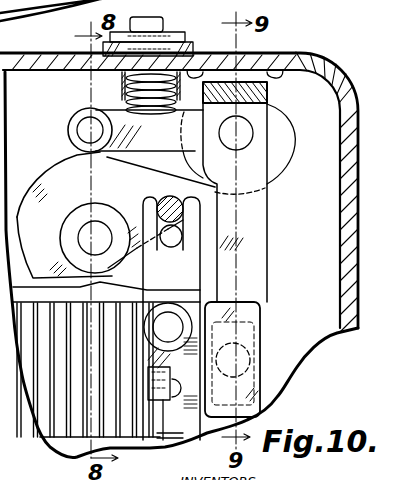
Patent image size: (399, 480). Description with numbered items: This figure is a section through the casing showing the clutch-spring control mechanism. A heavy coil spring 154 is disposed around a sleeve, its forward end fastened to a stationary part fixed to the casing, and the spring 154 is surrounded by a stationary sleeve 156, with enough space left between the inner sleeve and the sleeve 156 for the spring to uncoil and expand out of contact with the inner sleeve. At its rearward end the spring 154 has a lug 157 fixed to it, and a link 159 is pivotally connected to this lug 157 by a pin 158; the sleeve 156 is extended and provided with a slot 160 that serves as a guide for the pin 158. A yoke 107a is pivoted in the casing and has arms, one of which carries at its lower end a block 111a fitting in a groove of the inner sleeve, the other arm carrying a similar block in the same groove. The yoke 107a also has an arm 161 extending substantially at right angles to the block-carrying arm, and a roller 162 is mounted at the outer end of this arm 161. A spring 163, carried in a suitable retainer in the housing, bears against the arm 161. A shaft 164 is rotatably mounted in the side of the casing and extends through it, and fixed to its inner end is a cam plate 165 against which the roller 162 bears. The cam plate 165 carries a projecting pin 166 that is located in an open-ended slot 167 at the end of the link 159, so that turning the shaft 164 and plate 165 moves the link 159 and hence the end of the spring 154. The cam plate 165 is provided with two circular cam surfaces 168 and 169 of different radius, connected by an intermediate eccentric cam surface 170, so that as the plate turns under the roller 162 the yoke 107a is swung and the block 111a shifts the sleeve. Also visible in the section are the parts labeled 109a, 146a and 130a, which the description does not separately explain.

The yoke 107a is at (272, 93).
The plunger column 109a is at (256, 228).
The block 111a is at (258, 328).
The coil spring 154 is at (55, 417).
The stationary sleeve 156 is at (157, 439).
The lug 157 is at (182, 413).
The pin 158 is at (170, 355).
The link 159 is at (147, 278).
The slot 160 is at (182, 397).
The arm 161 is at (149, 130).
The roller 162 is at (77, 118).
The spring 163 is at (128, 96).
The shaft 164 is at (97, 233).
The cam plate 165 is at (40, 185).
The projecting pin 166 is at (172, 195).
The open ended slot 167 is at (175, 247).
The circular cam surface 168 is at (68, 165).
The circular cam surface 169 is at (36, 267).
The eccentric cam surface 170 is at (22, 225).
The housing 146a is at (14, 390).
The base 130a is at (14, 419).